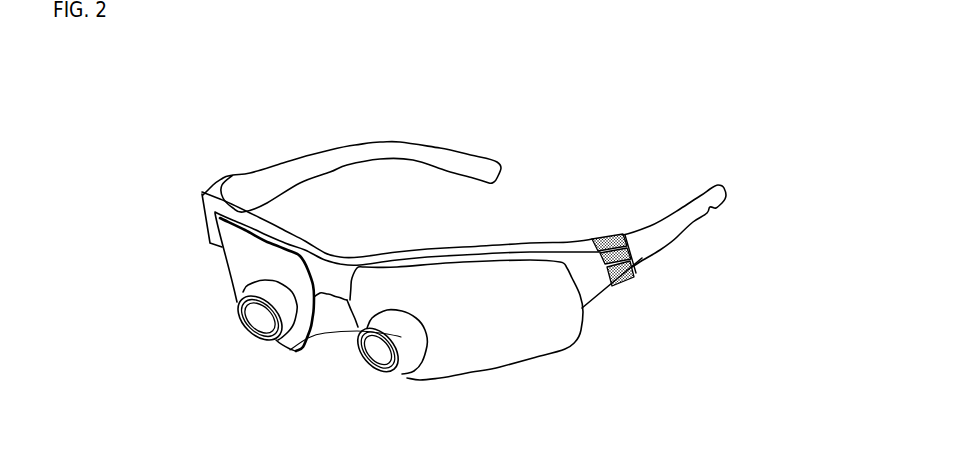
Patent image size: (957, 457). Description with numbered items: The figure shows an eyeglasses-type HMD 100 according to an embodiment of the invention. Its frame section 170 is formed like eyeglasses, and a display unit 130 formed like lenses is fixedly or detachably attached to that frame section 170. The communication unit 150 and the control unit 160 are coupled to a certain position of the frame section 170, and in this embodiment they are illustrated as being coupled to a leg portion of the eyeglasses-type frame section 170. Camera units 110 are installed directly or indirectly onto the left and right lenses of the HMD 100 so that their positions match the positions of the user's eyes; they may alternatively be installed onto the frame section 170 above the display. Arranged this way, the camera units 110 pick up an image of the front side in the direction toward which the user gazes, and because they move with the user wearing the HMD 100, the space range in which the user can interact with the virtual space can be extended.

The HMD 100 is at (232, 100).
The camera unit 110 is at (290, 347).
The display unit 130 is at (290, 350).
The communication unit 150 is at (607, 239).
The control unit 160 is at (629, 277).
The frame section 170 is at (306, 155).